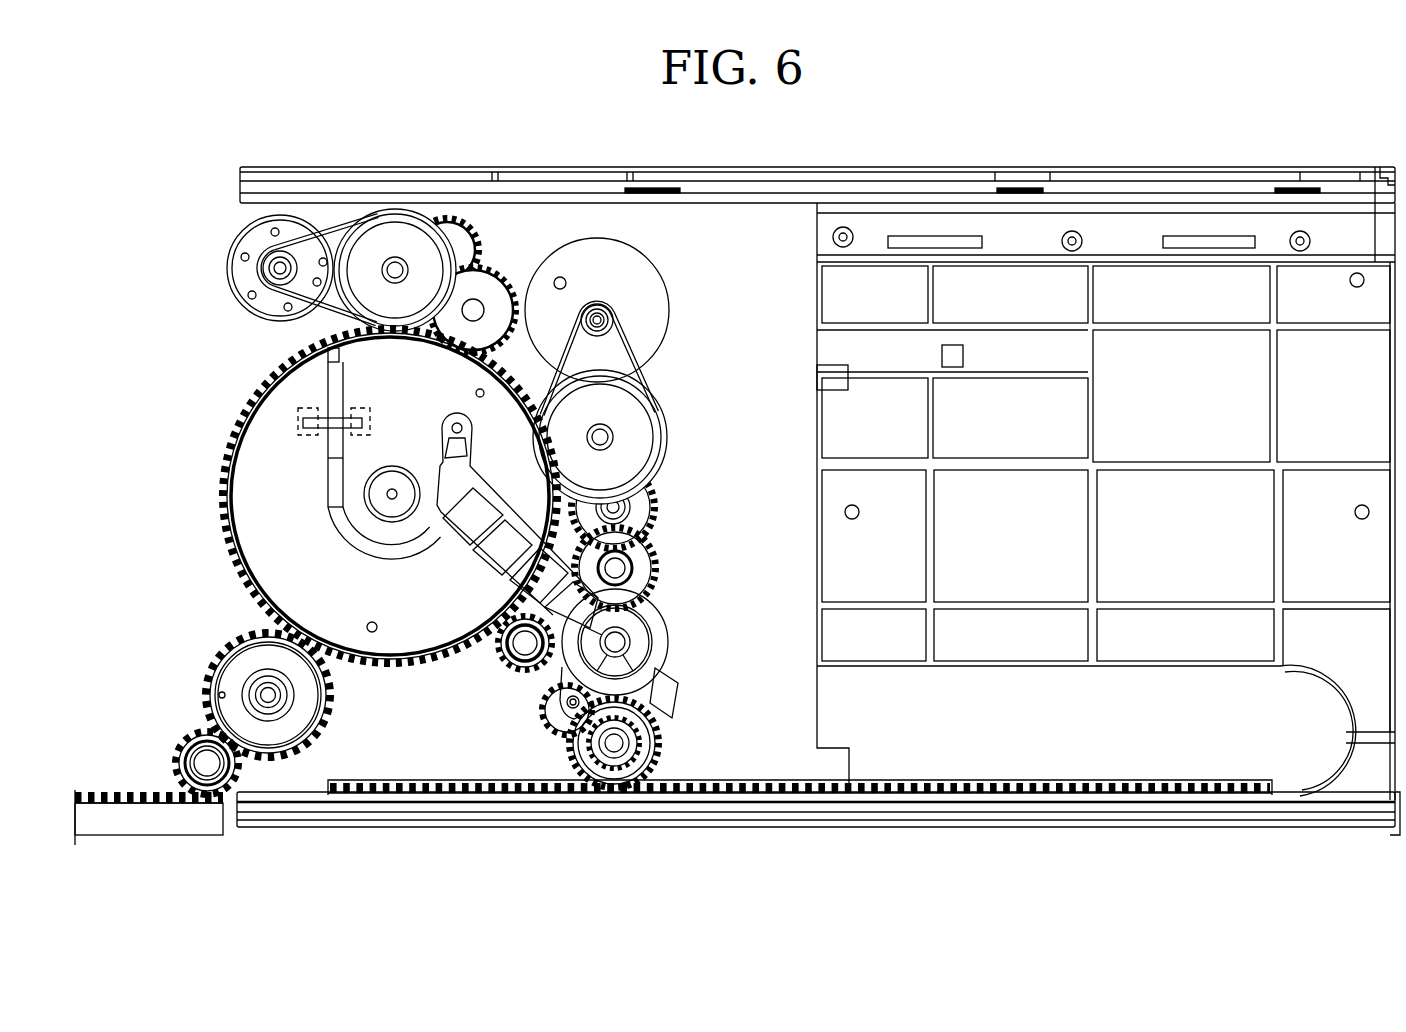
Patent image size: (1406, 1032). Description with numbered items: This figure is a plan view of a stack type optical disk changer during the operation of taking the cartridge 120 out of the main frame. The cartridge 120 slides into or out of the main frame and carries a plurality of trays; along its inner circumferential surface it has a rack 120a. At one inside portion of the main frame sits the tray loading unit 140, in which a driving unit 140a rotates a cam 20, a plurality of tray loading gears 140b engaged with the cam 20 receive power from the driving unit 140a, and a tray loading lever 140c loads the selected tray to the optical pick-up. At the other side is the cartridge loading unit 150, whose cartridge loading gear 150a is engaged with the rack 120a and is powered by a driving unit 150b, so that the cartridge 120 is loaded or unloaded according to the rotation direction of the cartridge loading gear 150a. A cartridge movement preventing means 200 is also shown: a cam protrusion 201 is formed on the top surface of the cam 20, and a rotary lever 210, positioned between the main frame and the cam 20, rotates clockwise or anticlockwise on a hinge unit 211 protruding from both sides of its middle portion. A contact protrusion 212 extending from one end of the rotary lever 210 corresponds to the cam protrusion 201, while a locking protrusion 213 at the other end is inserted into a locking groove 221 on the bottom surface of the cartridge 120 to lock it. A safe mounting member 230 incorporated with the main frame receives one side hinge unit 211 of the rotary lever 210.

The cam 20 is at (227, 535).
The cartridge 120 is at (861, 547).
The rack 120a is at (926, 790).
The tray loading unit 140 is at (215, 529).
The driving unit 140a is at (210, 259).
The tray loading gears 140b is at (180, 713).
The tray loading lever 140c is at (115, 790).
The cartridge loading unit 150 is at (612, 565).
The cartridge loading gear 150a is at (614, 745).
The driving unit 150b is at (686, 436).
The cartridge movement preventing means 200 is at (282, 431).
The cam protrusion 201 is at (345, 542).
The rotary lever 210 is at (328, 385).
The hinge unit 211 is at (300, 419).
The contact protrusion 212 is at (330, 478).
The locking protrusion 213 is at (336, 366).
The locking groove 221 is at (952, 345).
The safe mounting member 230 is at (328, 398).